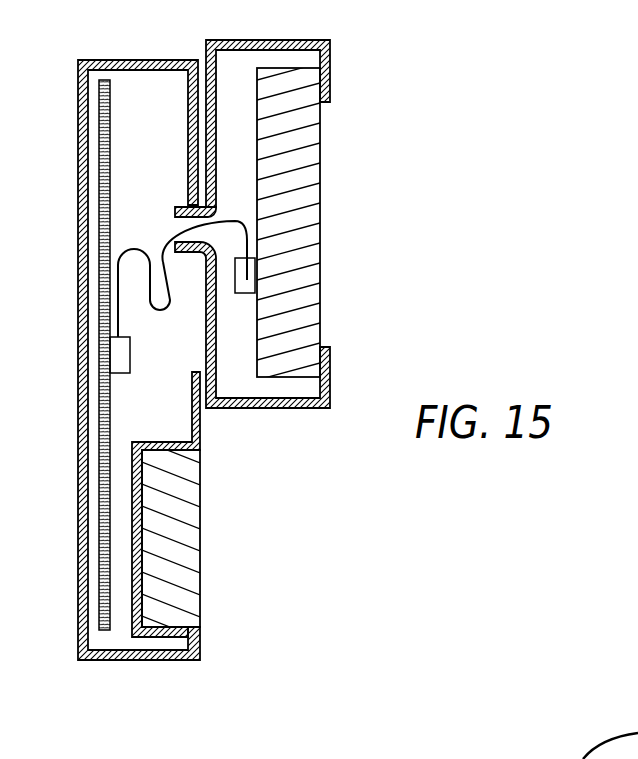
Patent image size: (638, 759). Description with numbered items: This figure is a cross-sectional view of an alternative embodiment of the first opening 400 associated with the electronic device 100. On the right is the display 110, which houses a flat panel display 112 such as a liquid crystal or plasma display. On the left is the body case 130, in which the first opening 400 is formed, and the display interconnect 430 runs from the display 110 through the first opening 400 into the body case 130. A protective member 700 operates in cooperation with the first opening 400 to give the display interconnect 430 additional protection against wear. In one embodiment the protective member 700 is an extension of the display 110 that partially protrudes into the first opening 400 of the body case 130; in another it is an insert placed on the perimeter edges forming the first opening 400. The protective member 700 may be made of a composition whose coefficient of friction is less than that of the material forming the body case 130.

The electronic device 100 is at (293, 584).
The display 110 is at (290, 40).
The flat panel display 112 is at (300, 175).
The body case 130 is at (118, 60).
The first opening 400 is at (188, 327).
The display interconnect 430 is at (133, 250).
The protective member 700 is at (178, 208).